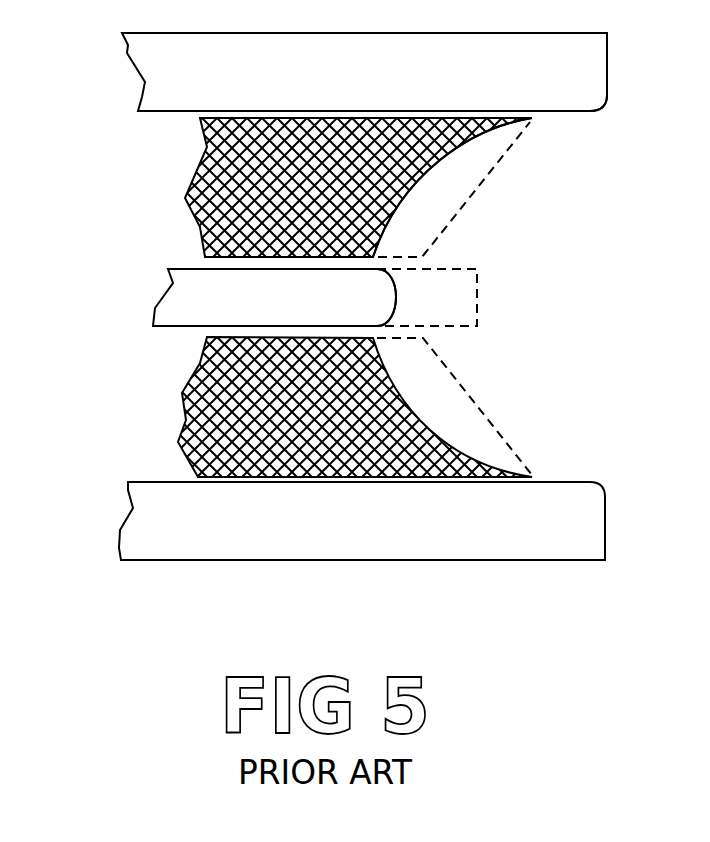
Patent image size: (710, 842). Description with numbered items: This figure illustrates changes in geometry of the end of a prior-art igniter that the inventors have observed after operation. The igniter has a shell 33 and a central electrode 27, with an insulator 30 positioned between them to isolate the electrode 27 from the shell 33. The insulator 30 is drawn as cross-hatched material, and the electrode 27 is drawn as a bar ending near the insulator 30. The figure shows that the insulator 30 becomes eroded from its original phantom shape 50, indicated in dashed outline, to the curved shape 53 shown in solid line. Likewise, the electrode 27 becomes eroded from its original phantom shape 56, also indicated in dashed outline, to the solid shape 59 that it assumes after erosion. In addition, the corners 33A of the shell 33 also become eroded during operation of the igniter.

The shell 33 is at (543, 86).
The corners 33A is at (603, 111).
The electrode 27 is at (243, 313).
The insulator 30 is at (197, 167).
The curved shape 53 is at (405, 193).
The solid shape 59 is at (395, 297).
The phantom shape 56 is at (477, 293).
The phantom shape 50 is at (480, 180).